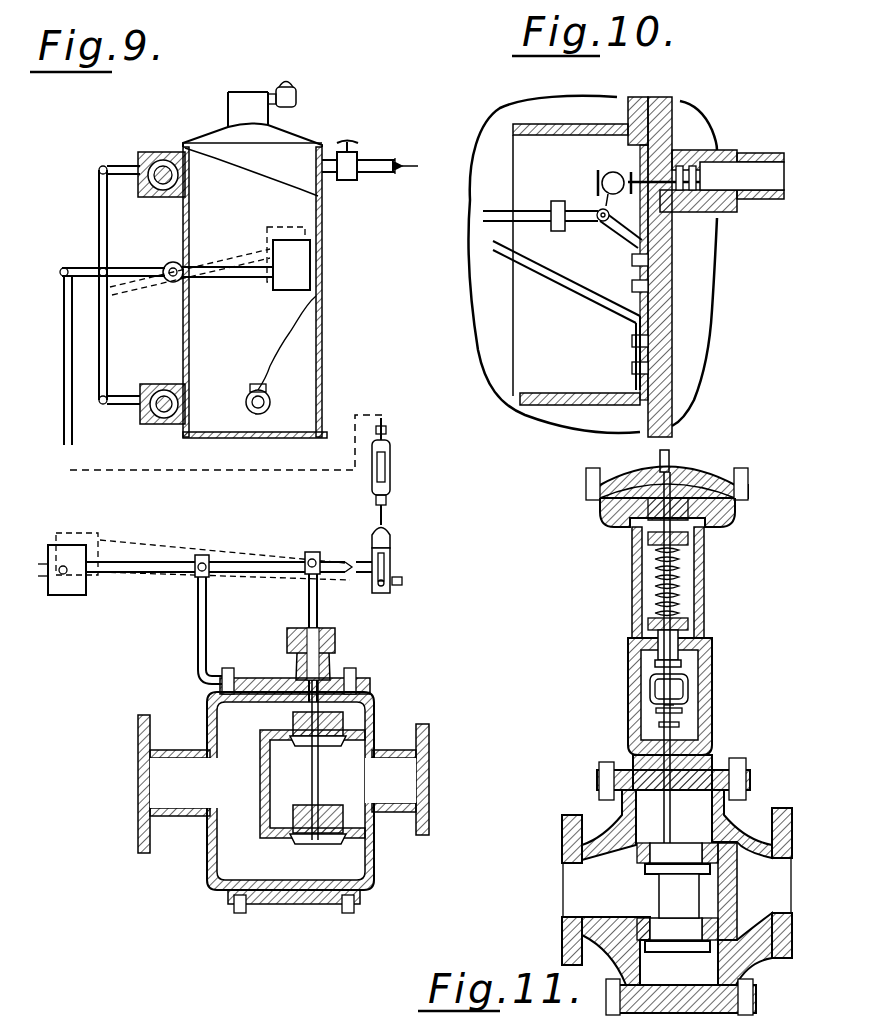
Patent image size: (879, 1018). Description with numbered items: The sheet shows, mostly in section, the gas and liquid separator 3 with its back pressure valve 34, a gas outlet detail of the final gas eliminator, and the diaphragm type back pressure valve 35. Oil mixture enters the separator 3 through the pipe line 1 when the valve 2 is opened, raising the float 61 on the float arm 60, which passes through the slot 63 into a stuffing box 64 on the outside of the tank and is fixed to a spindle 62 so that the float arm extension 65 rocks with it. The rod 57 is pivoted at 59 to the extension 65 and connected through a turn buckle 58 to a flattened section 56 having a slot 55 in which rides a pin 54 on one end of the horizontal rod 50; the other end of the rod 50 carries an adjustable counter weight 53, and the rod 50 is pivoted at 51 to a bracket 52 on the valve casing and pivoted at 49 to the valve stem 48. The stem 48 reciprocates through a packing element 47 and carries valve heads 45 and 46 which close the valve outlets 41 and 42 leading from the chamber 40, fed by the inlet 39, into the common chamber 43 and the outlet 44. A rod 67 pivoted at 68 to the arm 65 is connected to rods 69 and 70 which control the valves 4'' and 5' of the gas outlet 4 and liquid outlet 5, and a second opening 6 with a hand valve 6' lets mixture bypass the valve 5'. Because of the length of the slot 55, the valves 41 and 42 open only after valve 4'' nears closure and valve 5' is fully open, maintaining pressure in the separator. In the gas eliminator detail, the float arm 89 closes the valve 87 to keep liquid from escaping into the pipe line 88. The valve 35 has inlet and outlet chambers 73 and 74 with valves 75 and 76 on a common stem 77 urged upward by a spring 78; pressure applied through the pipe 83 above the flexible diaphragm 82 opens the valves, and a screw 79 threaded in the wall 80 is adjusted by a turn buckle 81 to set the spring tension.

In FIG. 9, the pipe line 1 is at (366, 168).
In FIG. 9, the valve 2 is at (352, 148).
In FIG. 9, the separator 3 is at (323, 283).
In FIG. 9, the gas outlet 4 is at (161, 162).
In FIG. 9, the valve 4'' is at (148, 207).
In FIG. 9, the liquid outlet 5 is at (167, 435).
In FIG. 9, the valve 5' is at (162, 391).
In FIG. 9, the second opening 6 is at (269, 399).
In FIG. 9, the hand valve 6' is at (284, 356).
In FIG. 9, the valve 34 is at (374, 700).
In FIG. 11, the valve 35 is at (713, 646).
In FIG. 9, the inlet 39 is at (405, 778).
In FIG. 9, the chamber 40 is at (312, 784).
In FIG. 9, the valve outlet 41 is at (324, 737).
In FIG. 9, the valve outlet 42 is at (325, 822).
In FIG. 9, the common chamber 43 is at (239, 718).
In FIG. 9, the outlet 44 is at (150, 797).
In FIG. 9, the valve head 45 is at (304, 746).
In FIG. 9, the valve head 46 is at (296, 845).
In FIG. 9, the packing element 47 is at (336, 640).
In FIG. 9, the valve stem 48 is at (319, 605).
In FIG. 9, the pivot 49 is at (312, 552).
In FIG. 9, the horizontal rod 50 is at (262, 563).
In FIG. 9, the pivot 51 is at (203, 555).
In FIG. 9, the bracket 52 is at (207, 605).
In FIG. 9, the adjustable counter weight 53 is at (88, 552).
In FIG. 9, the pin 54 is at (386, 583).
In FIG. 9, the slot 55 is at (374, 558).
In FIG. 9, the flattened section 56 is at (372, 536).
In FIG. 9, the rod 57 is at (63, 332).
In FIG. 9, the turn buckle 58 is at (372, 475).
In FIG. 9, the pivot 59 is at (60, 271).
In FIG. 9, the float arm 60 is at (244, 276).
In FIG. 9, the float 61 is at (312, 250).
In FIG. 9, the spindle 62 is at (170, 283).
In FIG. 9, the slot 63 is at (170, 263).
In FIG. 9, the stuffing box 64 is at (178, 262).
In FIG. 9, the float arm extension 65 is at (148, 278).
In FIG. 9, the rod 67 is at (98, 204).
In FIG. 9, the pivot 68 is at (101, 267).
In FIG. 9, the rod 69 is at (112, 164).
In FIG. 9, the rod 70 is at (122, 404).
In FIG. 11, the inlet chamber 73 is at (606, 887).
In FIG. 11, the outlet chamber 74 is at (752, 887).
In FIG. 11, the valve 75 is at (646, 871).
In FIG. 11, the valve 76 is at (676, 952).
In FIG. 11, the stem 77 is at (664, 806).
In FIG. 11, the spring 78 is at (652, 590).
In FIG. 11, the screw 79 is at (655, 663).
In FIG. 11, the wall 80 is at (646, 642).
In FIG. 11, the turn buckle 81 is at (650, 696).
In FIG. 11, the flexible diaphragm 82 is at (688, 478).
In FIG. 11, the pipe 83 is at (658, 455).
In FIG. 10, the valve 87 is at (696, 212).
In FIG. 10, the pipe line 88 is at (742, 158).
In FIG. 10, the float arm 89 is at (540, 209).